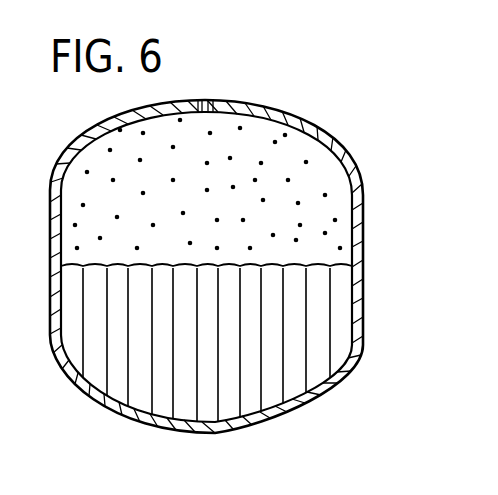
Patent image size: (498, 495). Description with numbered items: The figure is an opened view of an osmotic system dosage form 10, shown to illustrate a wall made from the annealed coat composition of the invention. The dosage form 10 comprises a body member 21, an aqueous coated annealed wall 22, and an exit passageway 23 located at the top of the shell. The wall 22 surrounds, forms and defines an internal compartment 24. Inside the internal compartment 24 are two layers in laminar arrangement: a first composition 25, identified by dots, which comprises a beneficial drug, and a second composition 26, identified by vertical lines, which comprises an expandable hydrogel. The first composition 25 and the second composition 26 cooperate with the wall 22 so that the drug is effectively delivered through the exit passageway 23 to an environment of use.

The dosage form 10 is at (229, 237).
The body member 21 is at (357, 168).
The aqueous coated annealed wall 22 is at (362, 201).
The exit passageway 23 is at (207, 103).
The internal compartment 24 is at (326, 235).
The first composition 25 is at (352, 265).
The second composition 26 is at (331, 314).